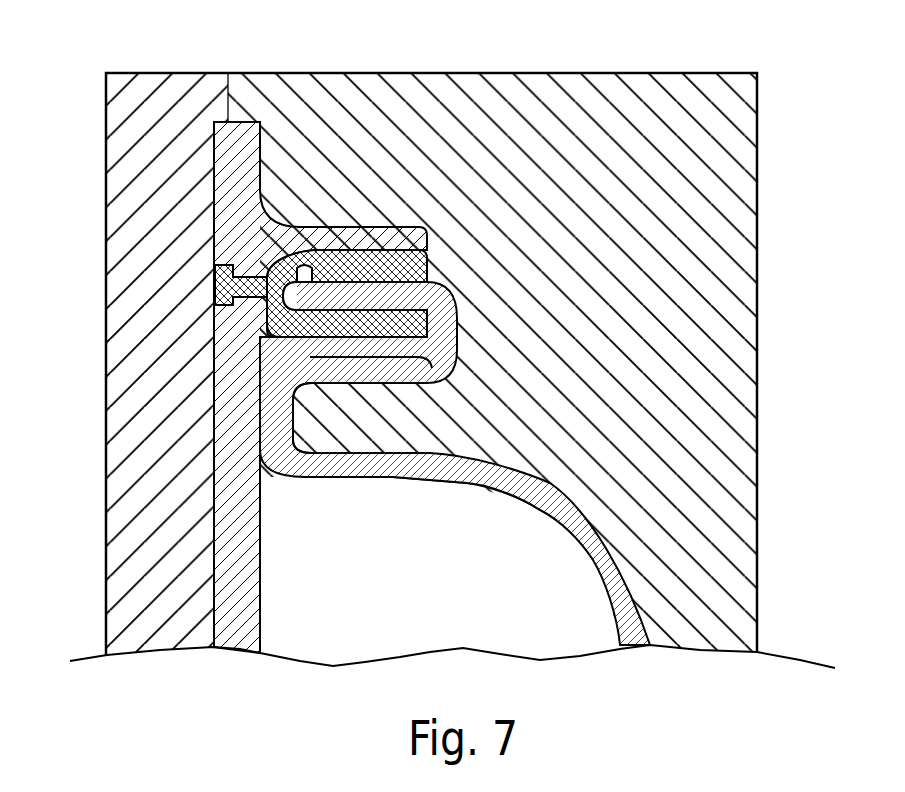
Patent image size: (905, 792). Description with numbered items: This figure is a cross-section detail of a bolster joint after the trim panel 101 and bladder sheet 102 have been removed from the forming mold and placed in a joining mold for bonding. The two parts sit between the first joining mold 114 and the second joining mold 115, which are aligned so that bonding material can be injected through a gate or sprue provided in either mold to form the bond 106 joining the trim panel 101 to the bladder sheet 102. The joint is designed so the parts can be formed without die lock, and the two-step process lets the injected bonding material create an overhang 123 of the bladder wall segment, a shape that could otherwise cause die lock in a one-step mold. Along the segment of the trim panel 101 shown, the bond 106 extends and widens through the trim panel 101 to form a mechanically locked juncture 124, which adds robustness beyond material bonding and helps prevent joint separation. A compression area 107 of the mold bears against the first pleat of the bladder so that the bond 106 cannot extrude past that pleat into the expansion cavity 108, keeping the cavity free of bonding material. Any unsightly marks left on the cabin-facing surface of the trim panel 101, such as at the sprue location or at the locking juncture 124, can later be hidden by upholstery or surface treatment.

The trim panel 101 is at (240, 137).
The bladder sheet 102 is at (637, 647).
The bond 106 is at (395, 262).
The compression area 107 is at (288, 417).
The expansion cavity 108 is at (337, 578).
The first joining mold 114 is at (150, 553).
The second joining mold 115 is at (697, 512).
The overhang 123 is at (333, 270).
The mechanically locked juncture 124 is at (215, 288).